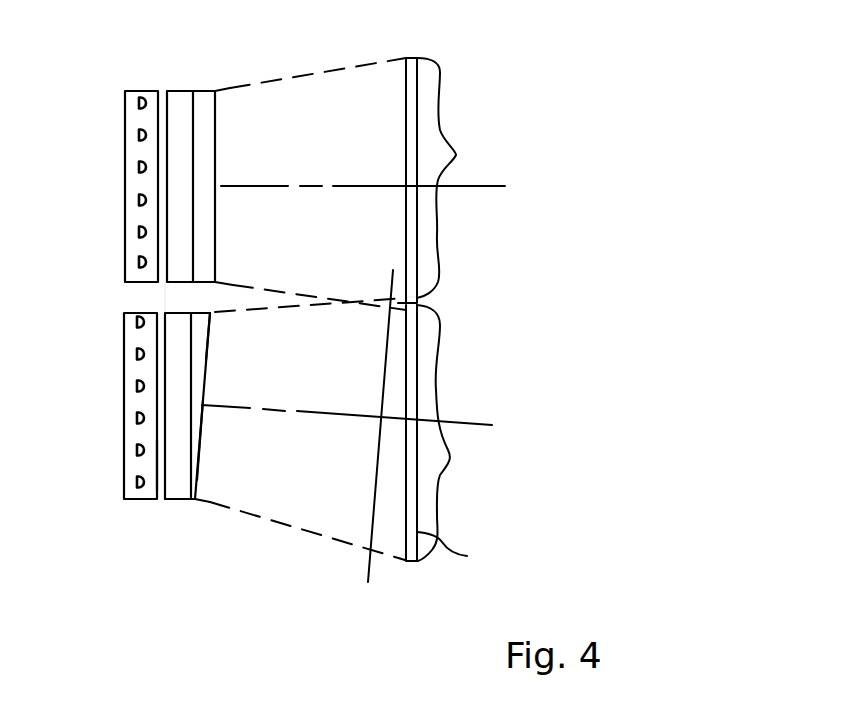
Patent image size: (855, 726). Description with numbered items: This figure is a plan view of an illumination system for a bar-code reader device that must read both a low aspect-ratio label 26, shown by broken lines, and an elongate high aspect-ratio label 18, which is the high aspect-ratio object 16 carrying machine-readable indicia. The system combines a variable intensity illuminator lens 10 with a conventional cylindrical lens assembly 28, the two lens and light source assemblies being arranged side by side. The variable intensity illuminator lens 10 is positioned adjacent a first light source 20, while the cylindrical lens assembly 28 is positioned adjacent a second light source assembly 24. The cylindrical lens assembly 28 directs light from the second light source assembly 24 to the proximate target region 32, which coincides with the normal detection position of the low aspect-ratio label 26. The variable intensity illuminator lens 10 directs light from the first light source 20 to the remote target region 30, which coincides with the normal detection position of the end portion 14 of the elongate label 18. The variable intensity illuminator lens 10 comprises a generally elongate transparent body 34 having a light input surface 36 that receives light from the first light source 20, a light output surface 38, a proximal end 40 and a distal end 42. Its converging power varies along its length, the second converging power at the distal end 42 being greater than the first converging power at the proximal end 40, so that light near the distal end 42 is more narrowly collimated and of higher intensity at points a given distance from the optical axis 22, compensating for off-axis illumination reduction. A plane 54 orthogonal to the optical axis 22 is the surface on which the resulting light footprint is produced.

The variable intensity illuminator lens 10 is at (213, 368).
The end portion 14 is at (467, 556).
The high aspect-ratio object 16 is at (411, 56).
The elongate label 18 is at (417, 505).
The first light source 20 is at (124, 372).
The optical axis 22 is at (362, 418).
The second light source assembly 24 is at (124, 158).
The low aspect-ratio label 26 is at (417, 276).
The cylindrical lens assembly 28 is at (182, 91).
The remote target region 30 is at (464, 433).
The proximate target region 32 is at (465, 178).
The elongate transparent body 34 is at (200, 440).
The light input surface 36 is at (163, 466).
The light output surface 38 is at (209, 335).
The proximal end 40 is at (178, 313).
The distal end 42 is at (175, 499).
The plane 54 is at (368, 568).